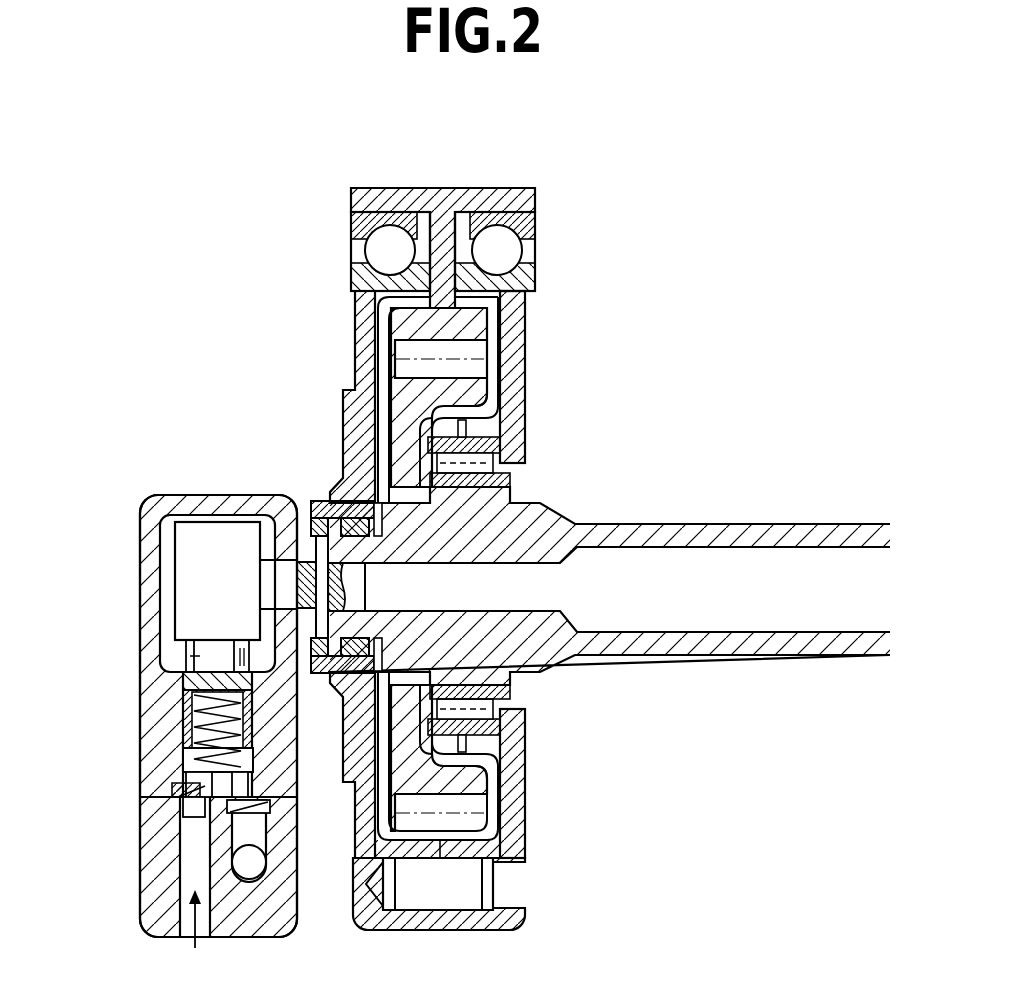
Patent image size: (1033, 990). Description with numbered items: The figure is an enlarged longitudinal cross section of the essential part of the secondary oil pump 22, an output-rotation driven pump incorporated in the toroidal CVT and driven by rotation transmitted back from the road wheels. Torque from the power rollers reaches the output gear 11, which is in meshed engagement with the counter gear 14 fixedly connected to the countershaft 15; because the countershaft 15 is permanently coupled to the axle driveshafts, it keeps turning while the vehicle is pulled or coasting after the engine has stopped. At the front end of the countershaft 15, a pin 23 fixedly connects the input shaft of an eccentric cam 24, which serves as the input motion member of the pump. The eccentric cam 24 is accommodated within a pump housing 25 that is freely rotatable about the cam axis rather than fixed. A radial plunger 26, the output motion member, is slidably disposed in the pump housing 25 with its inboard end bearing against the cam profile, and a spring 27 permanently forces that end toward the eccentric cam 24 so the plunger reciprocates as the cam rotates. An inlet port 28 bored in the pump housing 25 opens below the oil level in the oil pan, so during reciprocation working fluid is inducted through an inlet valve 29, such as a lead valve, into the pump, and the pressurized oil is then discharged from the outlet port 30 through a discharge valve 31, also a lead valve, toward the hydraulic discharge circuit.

The output gear 11 is at (478, 322).
The counter gear 14 is at (478, 390).
The countershaft 15 is at (830, 524).
The secondary oil pump 22 is at (131, 477).
The pin 23 is at (307, 530).
The eccentric cam 24 is at (218, 524).
The pump housing 25 is at (148, 534).
The radial plunger 26 is at (192, 655).
The spring 27 is at (185, 716).
The inlet port 28 is at (186, 880).
The inlet valve 29 is at (178, 780).
The outlet port 30 is at (237, 841).
The discharge valve 31 is at (298, 860).